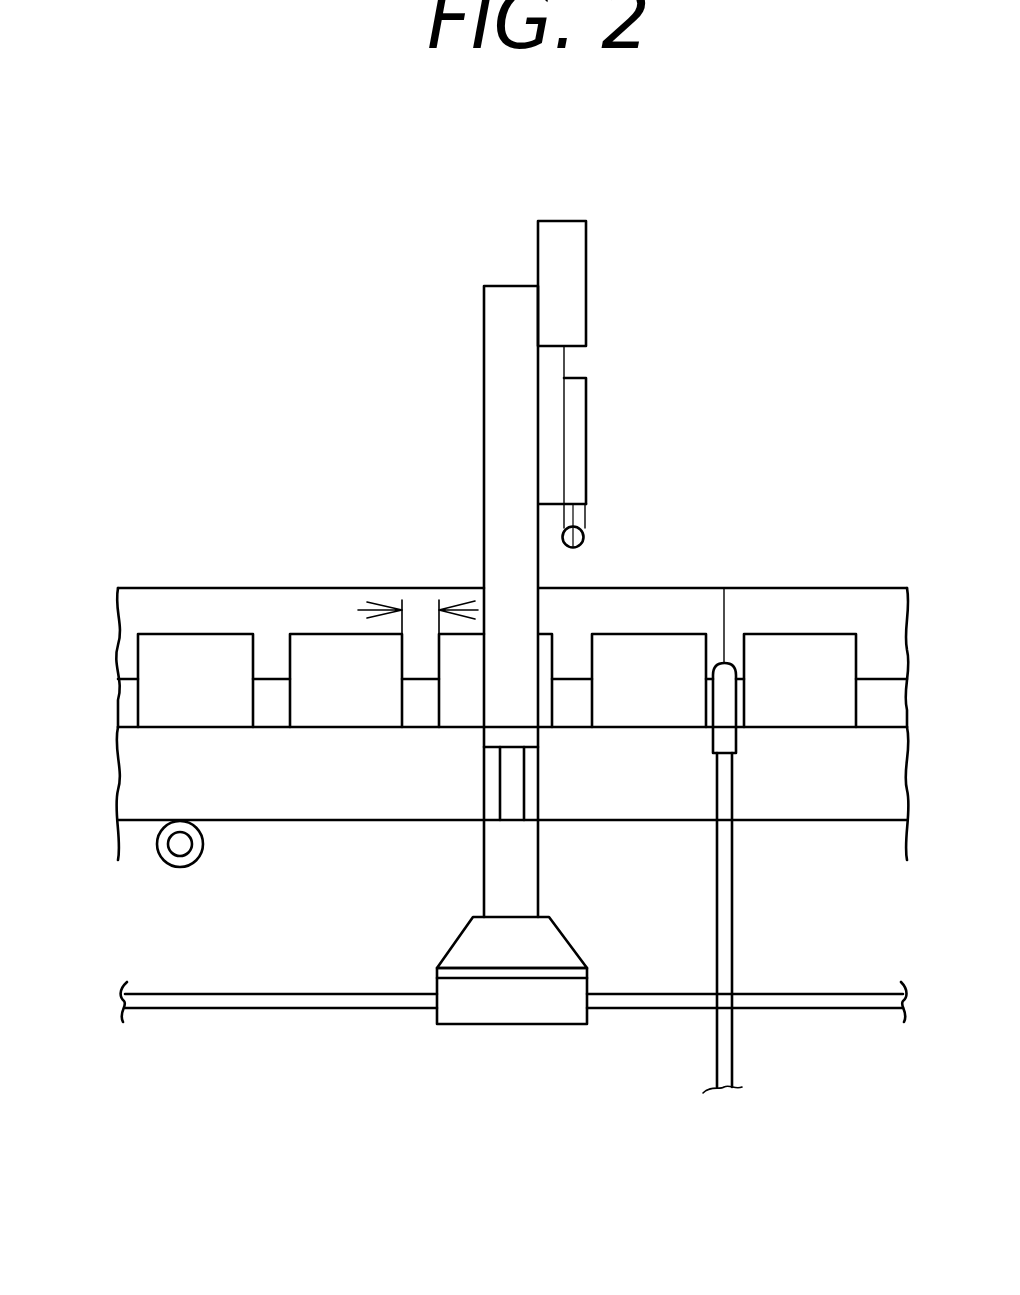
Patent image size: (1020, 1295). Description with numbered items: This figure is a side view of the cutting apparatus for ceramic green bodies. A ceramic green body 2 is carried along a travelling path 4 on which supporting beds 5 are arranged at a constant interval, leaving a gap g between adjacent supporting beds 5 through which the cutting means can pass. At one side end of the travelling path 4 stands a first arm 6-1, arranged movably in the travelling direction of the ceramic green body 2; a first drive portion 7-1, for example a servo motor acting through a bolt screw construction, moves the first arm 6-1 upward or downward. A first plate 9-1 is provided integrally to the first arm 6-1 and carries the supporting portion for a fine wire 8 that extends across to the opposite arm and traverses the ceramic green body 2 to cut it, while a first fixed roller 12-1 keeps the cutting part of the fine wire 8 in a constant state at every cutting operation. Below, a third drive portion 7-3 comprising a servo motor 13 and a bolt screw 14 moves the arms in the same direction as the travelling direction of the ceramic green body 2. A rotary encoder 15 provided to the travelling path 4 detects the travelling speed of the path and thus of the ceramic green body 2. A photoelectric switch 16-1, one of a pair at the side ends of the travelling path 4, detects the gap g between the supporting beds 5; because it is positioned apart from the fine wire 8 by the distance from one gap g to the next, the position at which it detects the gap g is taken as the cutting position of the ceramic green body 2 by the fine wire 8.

The ceramic green body 2 is at (697, 602).
The travelling path 4 is at (155, 779).
The supporting beds 5 is at (660, 702).
The first arm 6-1 is at (512, 447).
The first drive portion 7-1 is at (515, 887).
The third drive portion 7-3 is at (514, 1052).
The fine wire 8 is at (573, 518).
The first plate 9-1 is at (555, 370).
The first fixed roller 12-1 is at (585, 541).
The servo motor 13 is at (517, 1003).
The bolt screw 14 is at (522, 1108).
The rotary encoder 15 is at (203, 852).
The photoelectric switch 16-1 is at (727, 742).
The gap g is at (419, 610).